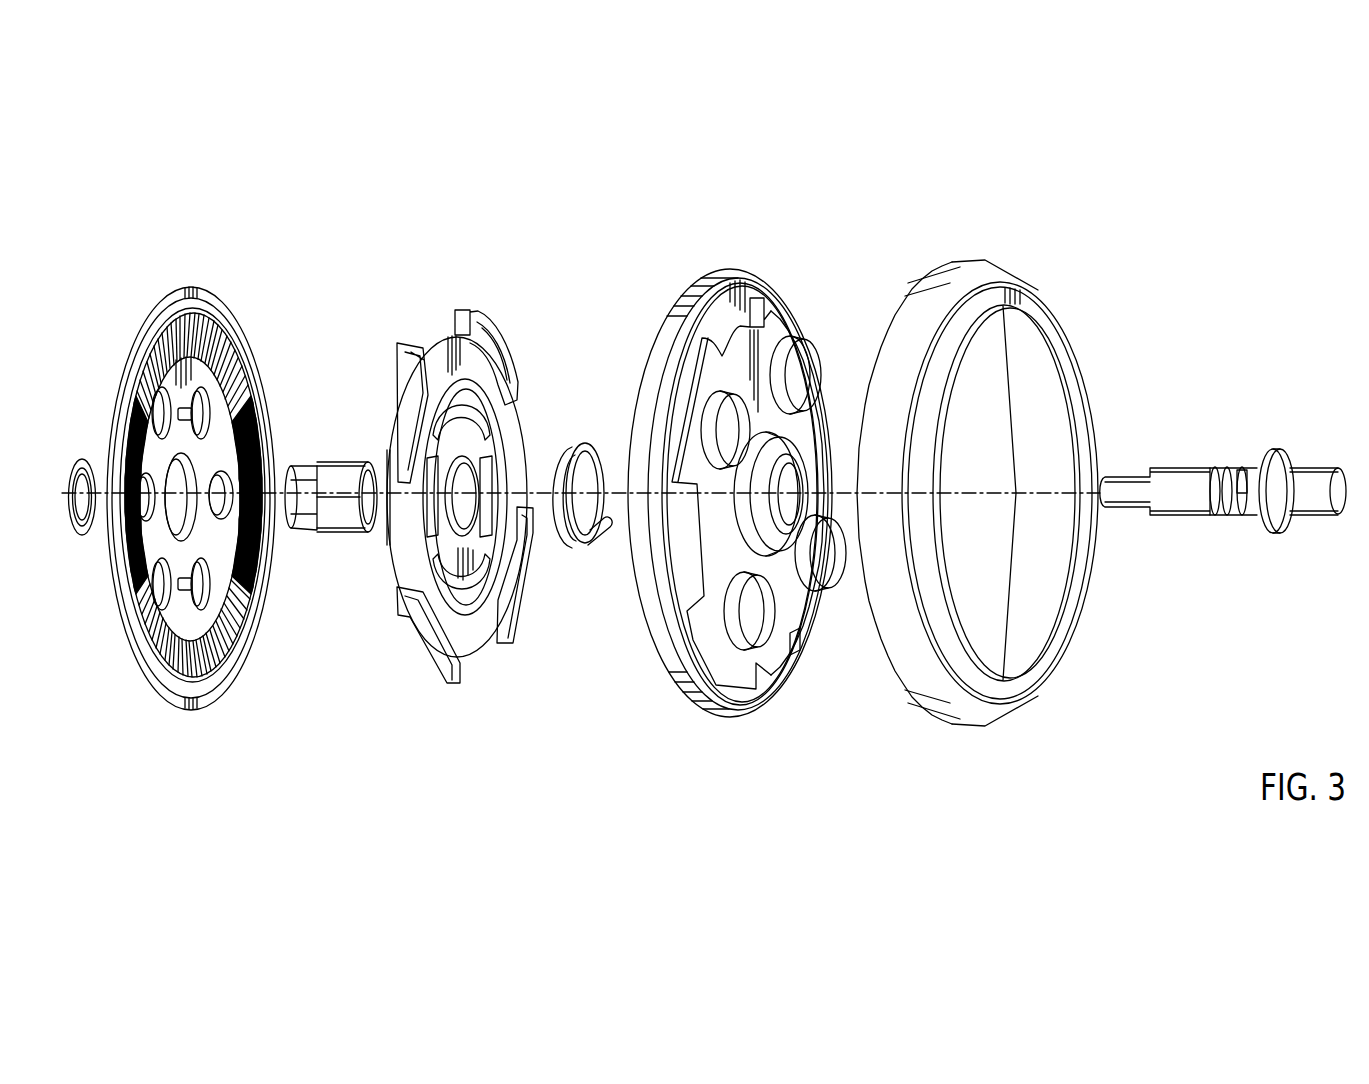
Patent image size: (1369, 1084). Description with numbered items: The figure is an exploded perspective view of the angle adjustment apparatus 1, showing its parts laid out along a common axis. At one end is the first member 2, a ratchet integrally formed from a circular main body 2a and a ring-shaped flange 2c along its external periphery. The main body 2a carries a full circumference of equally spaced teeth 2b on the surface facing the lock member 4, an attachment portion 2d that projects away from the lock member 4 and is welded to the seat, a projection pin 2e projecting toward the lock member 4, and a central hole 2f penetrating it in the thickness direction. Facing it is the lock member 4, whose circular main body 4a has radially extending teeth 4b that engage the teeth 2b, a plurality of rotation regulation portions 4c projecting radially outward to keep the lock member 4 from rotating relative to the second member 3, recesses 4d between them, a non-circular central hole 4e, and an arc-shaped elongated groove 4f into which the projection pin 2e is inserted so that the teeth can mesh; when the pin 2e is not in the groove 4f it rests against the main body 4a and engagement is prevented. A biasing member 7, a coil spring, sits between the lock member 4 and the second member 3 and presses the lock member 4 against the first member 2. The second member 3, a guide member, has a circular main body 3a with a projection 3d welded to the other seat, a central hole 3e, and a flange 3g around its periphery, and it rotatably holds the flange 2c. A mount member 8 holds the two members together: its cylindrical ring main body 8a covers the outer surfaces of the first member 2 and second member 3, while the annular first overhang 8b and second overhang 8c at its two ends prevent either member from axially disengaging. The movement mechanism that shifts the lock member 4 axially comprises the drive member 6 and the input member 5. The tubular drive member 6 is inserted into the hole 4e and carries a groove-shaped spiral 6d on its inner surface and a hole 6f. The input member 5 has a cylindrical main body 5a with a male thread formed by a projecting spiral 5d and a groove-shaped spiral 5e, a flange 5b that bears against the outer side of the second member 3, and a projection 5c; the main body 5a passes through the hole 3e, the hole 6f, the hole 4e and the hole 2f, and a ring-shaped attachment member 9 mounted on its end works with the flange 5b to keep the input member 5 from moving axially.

The angle adjustment apparatus 1 is at (290, 210).
The first member 2 is at (150, 268).
The main body 2a is at (215, 315).
The teeth 2b is at (202, 343).
The flange 2c is at (257, 373).
The attachment portion 2d is at (232, 648).
The projection pin 2e is at (212, 585).
The hole 2f is at (200, 527).
The second member 3 is at (780, 260).
The main body 3a is at (715, 618).
The projection 3d is at (756, 618).
The hole 3e is at (779, 521).
The flange 3g is at (660, 336).
The lock member 4 is at (518, 302).
The main body 4a is at (443, 363).
The teeth 4b is at (485, 343).
The rotation regulation portions 4c is at (403, 373).
The recesses 4d is at (482, 650).
The hole 4e is at (465, 508).
The elongated groove 4f is at (433, 470).
The input member 5 is at (1254, 428).
The main body 5a is at (1172, 497).
The flange 5b is at (1276, 516).
The projection 5c is at (1304, 496).
The projecting spiral 5d is at (1207, 500).
The groove-shaped spiral 5e is at (1218, 475).
The drive member 6 is at (355, 550).
The groove-shaped spiral 6d is at (335, 512).
The hole 6f is at (370, 475).
The biasing member 7 is at (584, 425).
The mount member 8 is at (1025, 248).
The ring main body 8a is at (936, 272).
The first overhang 8b is at (1015, 382).
The second overhang 8c is at (1040, 306).
The attachment member 9 is at (86, 430).